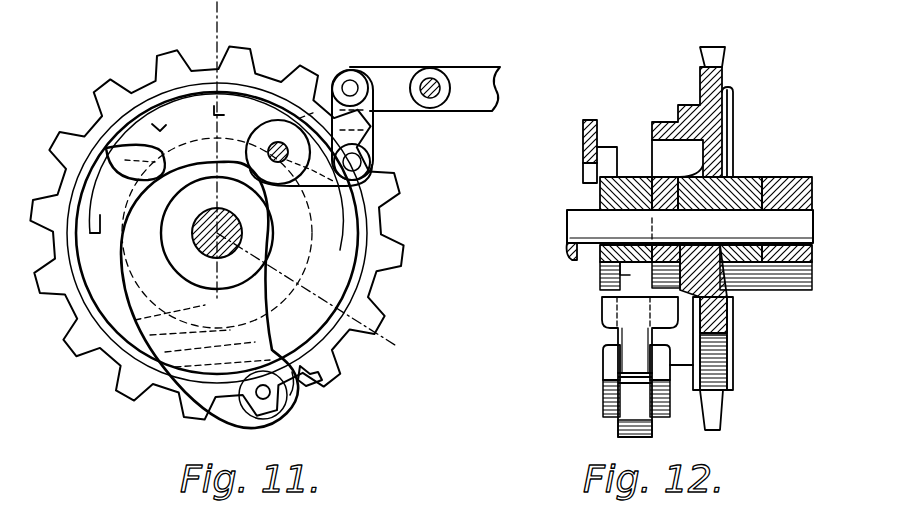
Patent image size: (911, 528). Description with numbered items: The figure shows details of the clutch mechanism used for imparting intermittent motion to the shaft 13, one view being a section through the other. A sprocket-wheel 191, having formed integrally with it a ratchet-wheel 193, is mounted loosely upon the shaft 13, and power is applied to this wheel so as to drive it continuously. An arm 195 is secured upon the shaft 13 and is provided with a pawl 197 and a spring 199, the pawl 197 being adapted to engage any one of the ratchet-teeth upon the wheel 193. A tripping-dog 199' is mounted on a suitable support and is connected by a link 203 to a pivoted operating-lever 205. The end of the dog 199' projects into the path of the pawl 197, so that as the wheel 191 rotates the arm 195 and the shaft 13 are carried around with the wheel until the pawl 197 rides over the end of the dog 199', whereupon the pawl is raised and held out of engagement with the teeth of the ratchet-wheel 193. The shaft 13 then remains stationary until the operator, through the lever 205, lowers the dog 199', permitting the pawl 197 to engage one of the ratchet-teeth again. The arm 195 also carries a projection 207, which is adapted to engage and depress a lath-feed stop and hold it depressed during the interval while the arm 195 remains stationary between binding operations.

In FIG. 11, the shaft 13 is at (236, 234).
In FIG. 12, the shaft 13 is at (580, 228).
In FIG. 11, the sprocket-wheel 191 is at (424, 268).
In FIG. 11, the ratchet-wheel 193 is at (131, 302).
In FIG. 12, the ratchet-wheel 193 is at (687, 112).
In FIG. 11, the arm 195 is at (182, 347).
In FIG. 11, the pawl 197 is at (343, 350).
In FIG. 12, the pawl 197 is at (733, 88).
In FIG. 11, the spring 199 is at (309, 411).
In FIG. 12, the spring 199 is at (594, 411).
In FIG. 11, the tripping-dog 199' is at (102, 137).
In FIG. 12, the tripping-dog 199' is at (567, 151).
In FIG. 11, the link 203 is at (374, 135).
In FIG. 11, the operating-lever 205 is at (474, 112).
In FIG. 11, the projection 207 is at (285, 148).